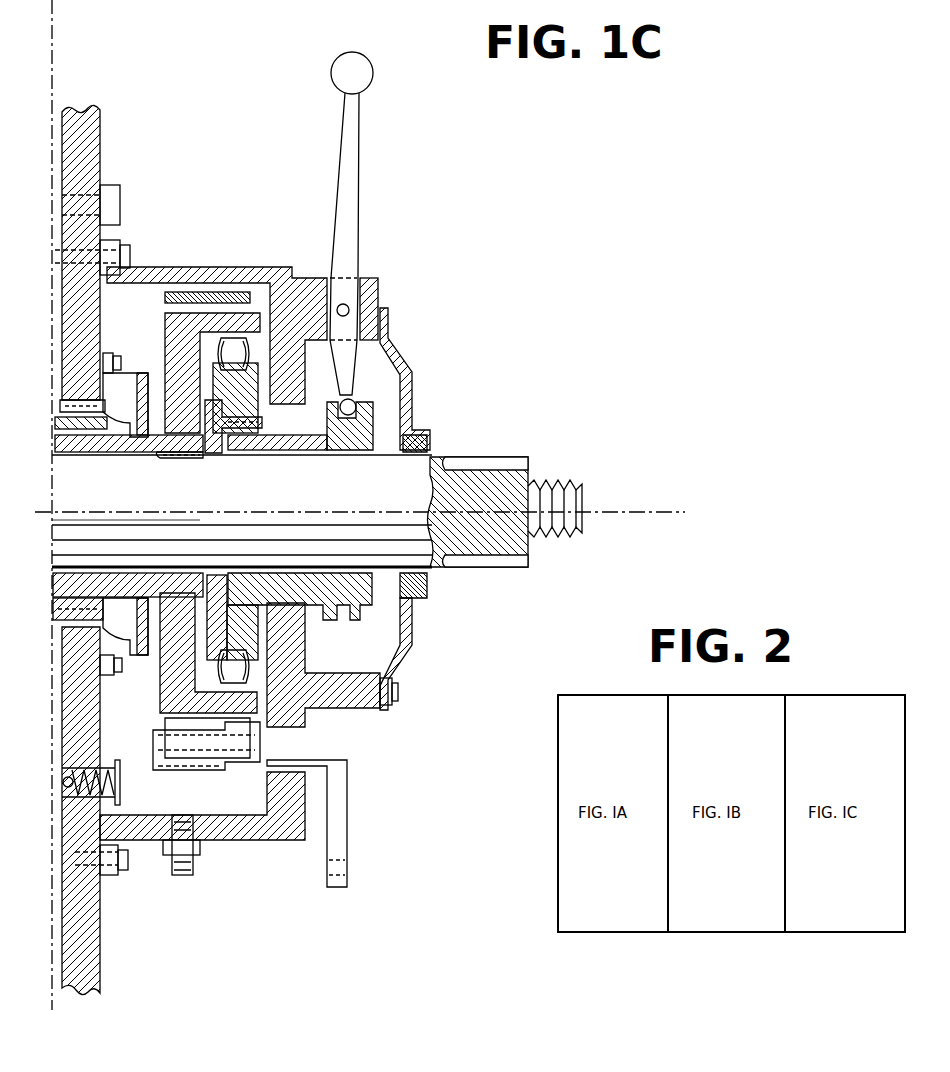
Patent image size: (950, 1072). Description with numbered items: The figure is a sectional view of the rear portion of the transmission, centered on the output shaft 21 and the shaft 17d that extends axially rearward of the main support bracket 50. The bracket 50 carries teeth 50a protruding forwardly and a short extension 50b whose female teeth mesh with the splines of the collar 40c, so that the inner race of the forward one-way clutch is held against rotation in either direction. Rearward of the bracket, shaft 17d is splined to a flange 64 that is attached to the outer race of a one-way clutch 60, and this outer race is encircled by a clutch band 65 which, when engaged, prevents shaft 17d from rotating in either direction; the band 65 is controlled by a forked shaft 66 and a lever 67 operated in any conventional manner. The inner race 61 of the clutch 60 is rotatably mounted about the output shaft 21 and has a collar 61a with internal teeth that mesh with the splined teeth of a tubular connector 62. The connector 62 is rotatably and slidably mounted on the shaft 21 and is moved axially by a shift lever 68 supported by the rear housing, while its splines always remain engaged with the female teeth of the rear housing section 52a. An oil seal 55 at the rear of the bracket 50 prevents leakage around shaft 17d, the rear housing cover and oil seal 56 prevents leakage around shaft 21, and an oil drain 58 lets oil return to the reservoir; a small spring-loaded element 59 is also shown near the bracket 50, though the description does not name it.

The mounting plate 50 is at (100, 166).
The mounting bolts 50a is at (62, 260).
The plate bore 50b is at (118, 598).
The housing shoulder 52a is at (325, 420).
The cup seal 55 is at (138, 655).
The cover 56 is at (413, 392).
The bolt 58 is at (192, 862).
The spring detent 59 is at (121, 784).
The clutch ring 60 is at (207, 682).
The bearing 61 is at (262, 400).
The bearing inner race 61a is at (240, 452).
The pivot pin 62 is at (360, 440).
The clutch member 64 is at (178, 345).
The friction lining 65 is at (208, 298).
The bracket 66 is at (306, 752).
The arm 67 is at (338, 818).
The lever 68 is at (352, 218).
The sleeve 17d is at (120, 452).
The shaft 21 is at (246, 549).
The retainer 40c is at (65, 455).